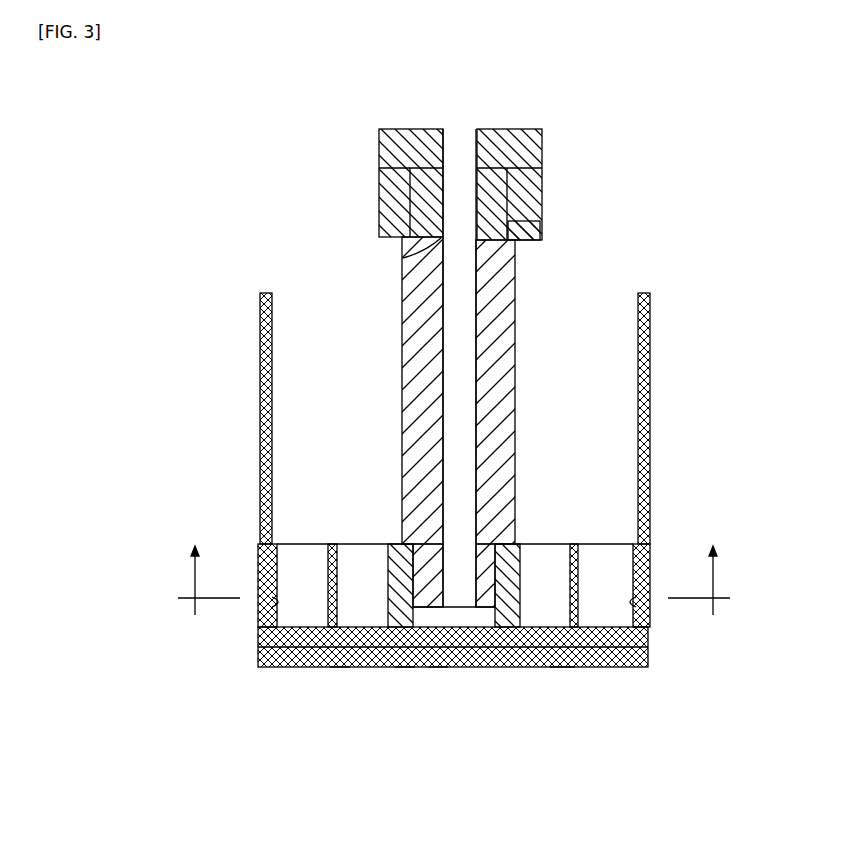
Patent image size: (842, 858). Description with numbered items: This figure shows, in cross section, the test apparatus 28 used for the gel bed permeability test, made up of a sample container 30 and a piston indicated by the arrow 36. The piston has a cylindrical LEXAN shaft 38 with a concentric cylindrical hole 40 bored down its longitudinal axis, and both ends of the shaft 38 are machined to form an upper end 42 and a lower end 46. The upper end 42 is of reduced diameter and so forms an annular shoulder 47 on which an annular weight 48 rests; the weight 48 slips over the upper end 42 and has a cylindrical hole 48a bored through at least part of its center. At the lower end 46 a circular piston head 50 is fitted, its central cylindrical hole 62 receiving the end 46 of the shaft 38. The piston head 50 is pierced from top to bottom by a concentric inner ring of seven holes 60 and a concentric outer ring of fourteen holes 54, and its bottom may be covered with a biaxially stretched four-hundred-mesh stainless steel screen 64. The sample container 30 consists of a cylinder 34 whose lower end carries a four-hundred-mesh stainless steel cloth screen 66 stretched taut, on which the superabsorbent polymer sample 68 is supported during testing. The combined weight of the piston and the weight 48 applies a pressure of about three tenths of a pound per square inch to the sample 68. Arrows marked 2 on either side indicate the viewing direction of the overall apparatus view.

The section line 2- 2 is at (449, 587).
The test apparatus 28 is at (612, 244).
The sample container 30 is at (260, 414).
The cylinder 34 is at (650, 465).
The interior chamber 36 is at (536, 462).
The shaft 38 is at (402, 430).
The cylindrical hole 40 is at (476, 277).
The upper end 42 is at (403, 258).
The lower end 46 is at (497, 668).
The annular shoulder 47 is at (542, 232).
The annular weight 48 is at (379, 180).
The cylindrical hole 48a is at (467, 152).
The piston head 50 is at (650, 543).
The outer ring holes 54 is at (262, 610).
The inner ring holes 60 is at (363, 544).
The cylindrical hole 62 is at (405, 667).
The stainless steel screen 64 is at (562, 668).
The stainless steel cloth screen 66 is at (437, 668).
The superabsorbent polymer sample 68 is at (340, 668).